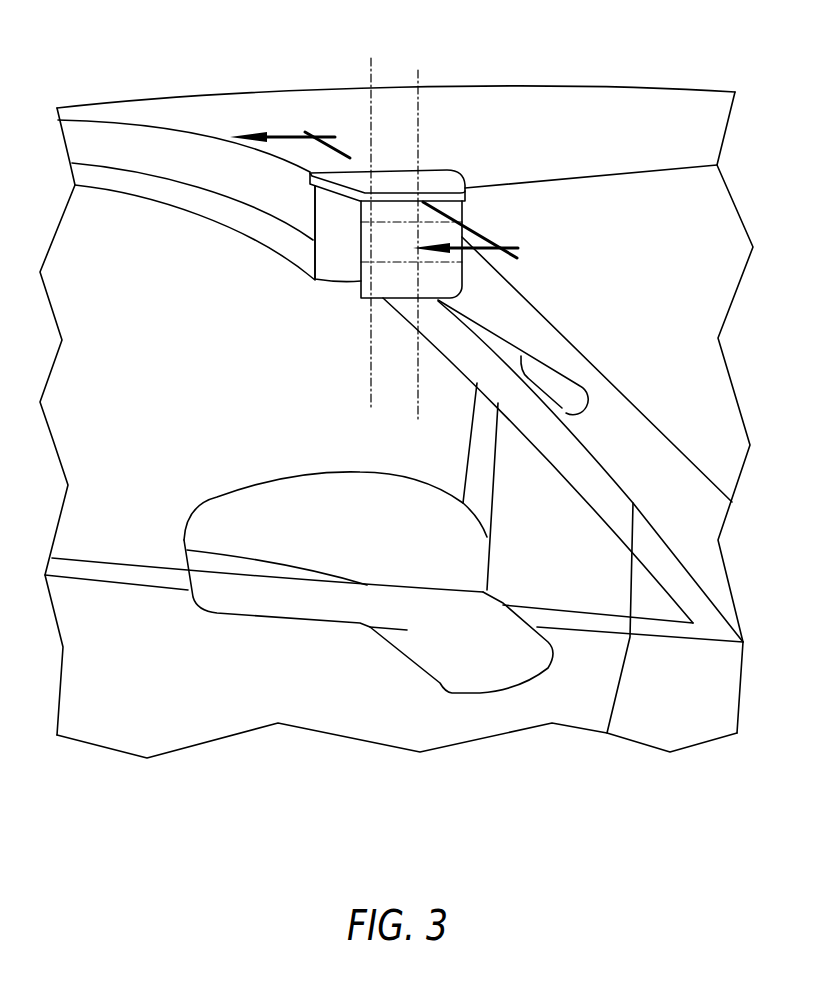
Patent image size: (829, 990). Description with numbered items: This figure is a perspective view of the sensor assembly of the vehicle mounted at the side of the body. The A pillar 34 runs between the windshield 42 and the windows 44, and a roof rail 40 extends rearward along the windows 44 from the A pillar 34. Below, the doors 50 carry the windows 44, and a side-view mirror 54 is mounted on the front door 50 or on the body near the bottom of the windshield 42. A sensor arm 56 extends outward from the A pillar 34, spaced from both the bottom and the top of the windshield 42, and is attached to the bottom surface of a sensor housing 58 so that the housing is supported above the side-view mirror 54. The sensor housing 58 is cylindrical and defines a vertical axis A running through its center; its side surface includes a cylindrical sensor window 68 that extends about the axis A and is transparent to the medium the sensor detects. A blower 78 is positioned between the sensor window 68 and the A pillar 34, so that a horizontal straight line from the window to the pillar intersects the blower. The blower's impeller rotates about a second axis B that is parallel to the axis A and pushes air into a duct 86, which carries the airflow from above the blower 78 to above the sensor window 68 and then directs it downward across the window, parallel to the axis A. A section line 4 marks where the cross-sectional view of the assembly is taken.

The A pillar 34 is at (622, 390).
The roof rail 40 is at (143, 127).
The windshield 42 is at (665, 244).
The window 44 is at (143, 387).
The door 50 is at (127, 676).
The side-view mirror 54 is at (277, 618).
The sensor arm 56 is at (537, 323).
The sensor housing 58 is at (360, 277).
The sensor window 68 is at (360, 237).
The blower 78 is at (312, 265).
The duct 86 is at (436, 169).
The section line 4- 4 is at (384, 193).
The axis A is at (419, 232).
The second axis B is at (372, 219).